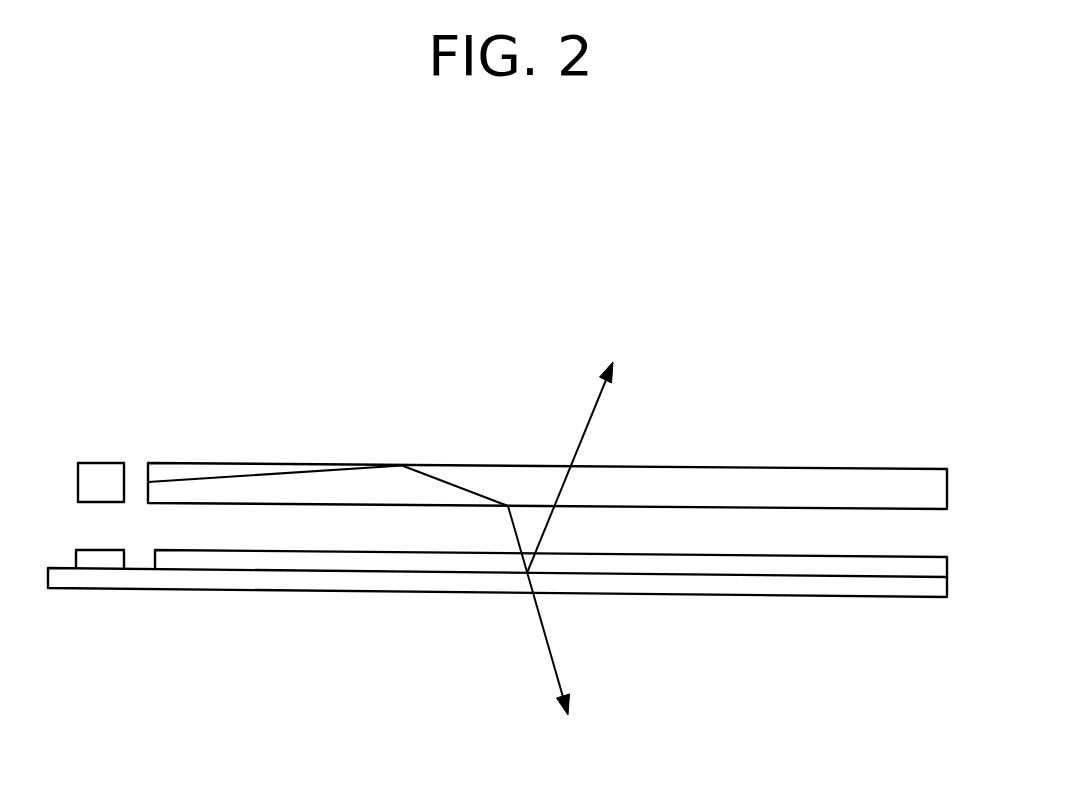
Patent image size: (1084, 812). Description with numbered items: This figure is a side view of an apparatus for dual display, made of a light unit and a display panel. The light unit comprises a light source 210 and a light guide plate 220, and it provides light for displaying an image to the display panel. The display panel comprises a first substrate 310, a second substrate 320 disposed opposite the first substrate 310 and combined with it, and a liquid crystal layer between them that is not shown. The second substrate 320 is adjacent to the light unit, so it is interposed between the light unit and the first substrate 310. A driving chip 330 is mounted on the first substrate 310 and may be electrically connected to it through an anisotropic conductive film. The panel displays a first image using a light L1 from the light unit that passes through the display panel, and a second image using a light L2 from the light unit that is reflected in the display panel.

The light source 210 is at (102, 475).
The light guide plate 220 is at (865, 481).
The first substrate 310 is at (777, 583).
The second substrate 320 is at (863, 568).
The driving chip 330 is at (103, 560).
The light L1 is at (545, 628).
The light L2 is at (578, 452).